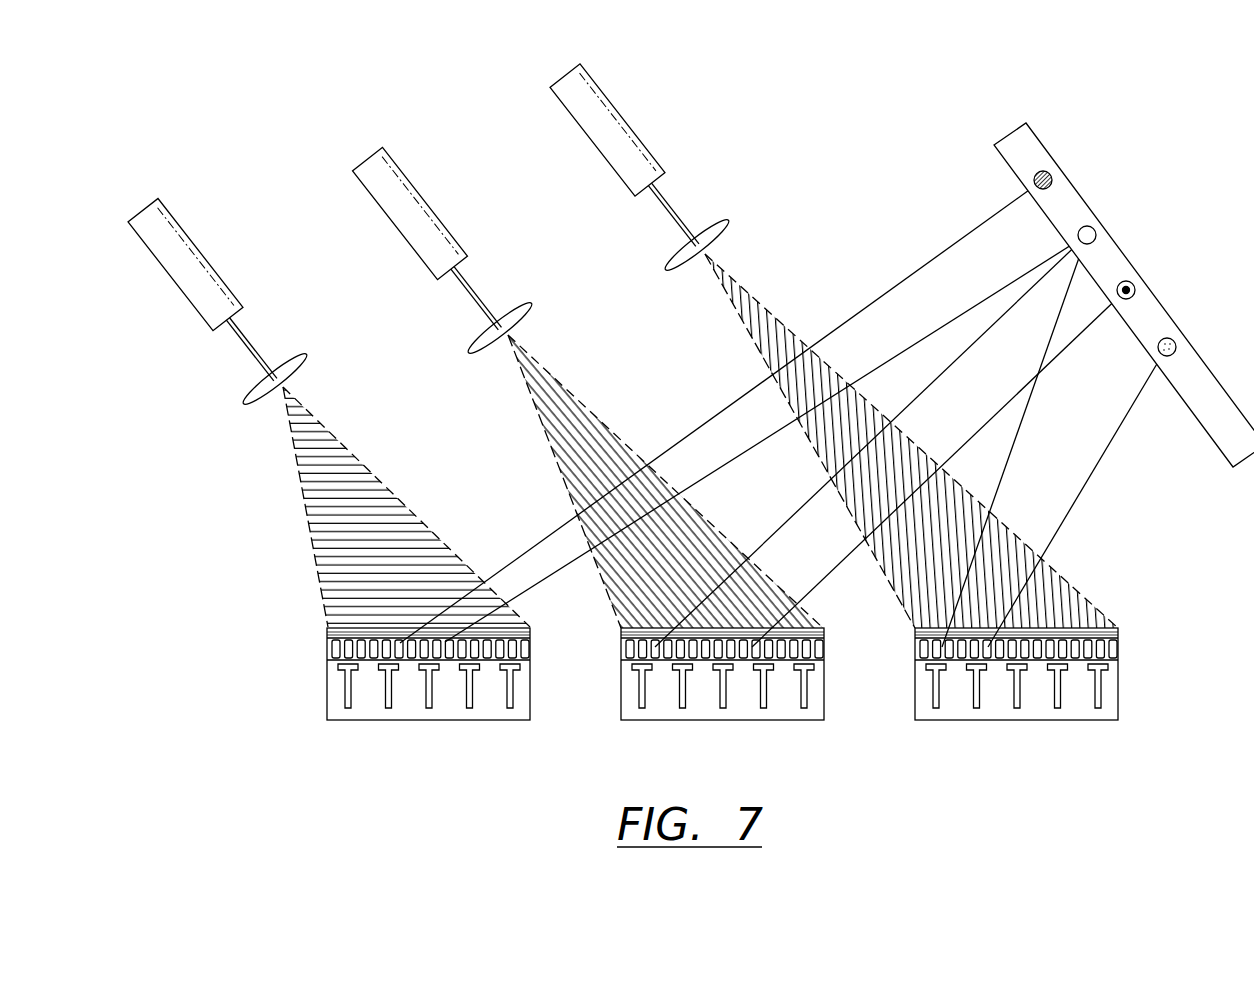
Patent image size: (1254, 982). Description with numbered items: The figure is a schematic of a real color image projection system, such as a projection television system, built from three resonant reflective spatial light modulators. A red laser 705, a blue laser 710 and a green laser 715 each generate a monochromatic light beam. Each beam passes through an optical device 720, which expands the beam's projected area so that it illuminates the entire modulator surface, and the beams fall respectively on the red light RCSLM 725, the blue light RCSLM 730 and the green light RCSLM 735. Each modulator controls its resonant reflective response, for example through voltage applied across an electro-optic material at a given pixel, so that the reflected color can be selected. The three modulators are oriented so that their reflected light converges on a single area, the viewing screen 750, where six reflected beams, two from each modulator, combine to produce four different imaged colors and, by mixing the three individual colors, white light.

The red laser 705 is at (623, 142).
The blue laser 710 is at (182, 247).
The green laser 715 is at (407, 183).
The optical device 720 is at (303, 357).
The red light RCSLM 725 is at (915, 712).
The blue light RCSLM 730 is at (327, 678).
The green light RCSLM 735 is at (620, 712).
The viewing screen 750 is at (1075, 205).